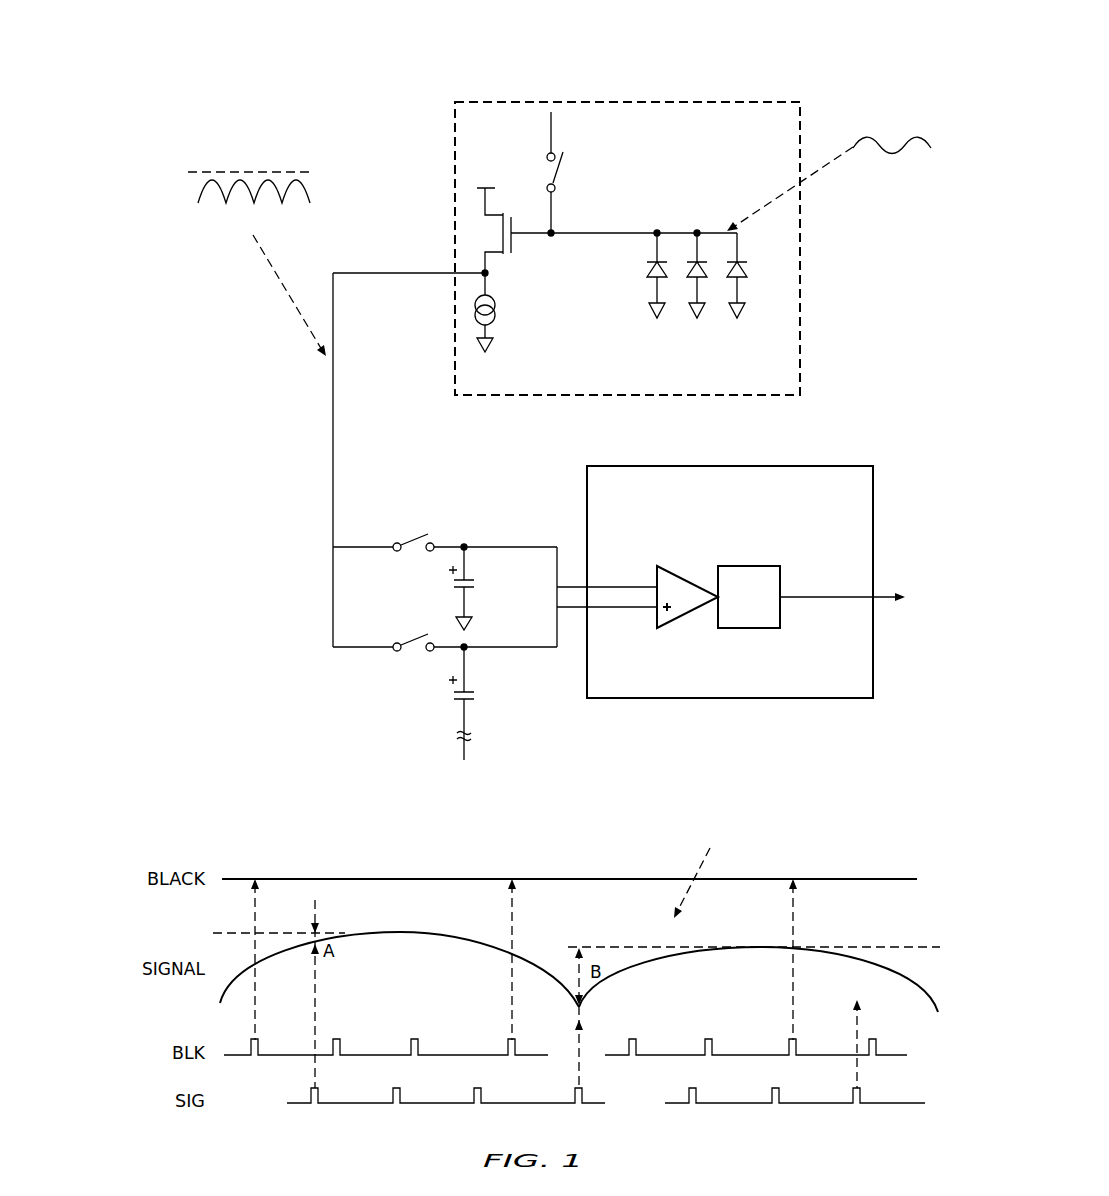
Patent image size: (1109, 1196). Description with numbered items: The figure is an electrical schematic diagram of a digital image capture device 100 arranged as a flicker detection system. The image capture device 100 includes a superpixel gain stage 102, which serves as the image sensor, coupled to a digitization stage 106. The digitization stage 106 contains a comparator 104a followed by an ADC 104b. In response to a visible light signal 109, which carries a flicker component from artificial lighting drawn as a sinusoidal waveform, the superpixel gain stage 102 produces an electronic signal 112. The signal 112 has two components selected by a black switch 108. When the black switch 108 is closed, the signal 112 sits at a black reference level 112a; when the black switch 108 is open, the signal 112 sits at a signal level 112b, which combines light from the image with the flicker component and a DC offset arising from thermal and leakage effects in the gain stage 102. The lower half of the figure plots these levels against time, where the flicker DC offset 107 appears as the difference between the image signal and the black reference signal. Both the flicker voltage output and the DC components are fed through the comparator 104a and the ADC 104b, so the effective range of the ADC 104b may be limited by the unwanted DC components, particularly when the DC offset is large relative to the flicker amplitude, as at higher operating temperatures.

The digital image capture device 100 is at (388, 68).
The superpixel gain stage 102 is at (665, 102).
The comparator 104a is at (689, 580).
The ADC 104b is at (750, 566).
The digitization stage 106 is at (828, 465).
The flicker DC offset 107 is at (516, 916).
The black switch 108 is at (562, 172).
The visible light signal 109 is at (926, 139).
The electronic signal 112 is at (248, 117).
The black reference level 112a is at (196, 172).
The signal level 112b is at (198, 195).